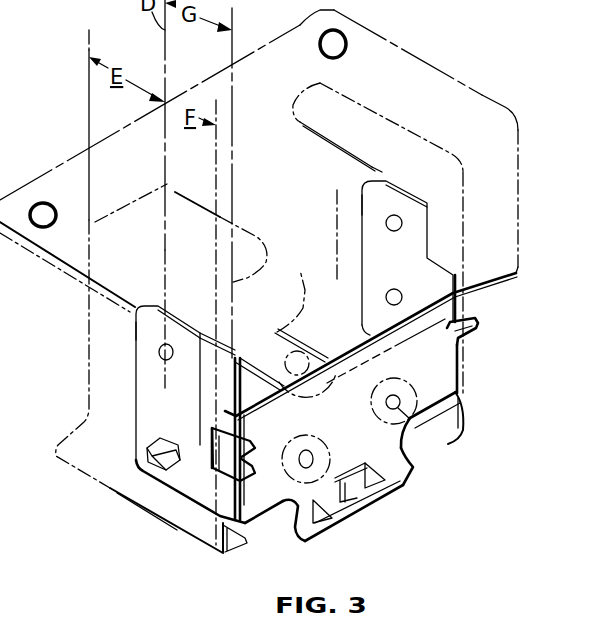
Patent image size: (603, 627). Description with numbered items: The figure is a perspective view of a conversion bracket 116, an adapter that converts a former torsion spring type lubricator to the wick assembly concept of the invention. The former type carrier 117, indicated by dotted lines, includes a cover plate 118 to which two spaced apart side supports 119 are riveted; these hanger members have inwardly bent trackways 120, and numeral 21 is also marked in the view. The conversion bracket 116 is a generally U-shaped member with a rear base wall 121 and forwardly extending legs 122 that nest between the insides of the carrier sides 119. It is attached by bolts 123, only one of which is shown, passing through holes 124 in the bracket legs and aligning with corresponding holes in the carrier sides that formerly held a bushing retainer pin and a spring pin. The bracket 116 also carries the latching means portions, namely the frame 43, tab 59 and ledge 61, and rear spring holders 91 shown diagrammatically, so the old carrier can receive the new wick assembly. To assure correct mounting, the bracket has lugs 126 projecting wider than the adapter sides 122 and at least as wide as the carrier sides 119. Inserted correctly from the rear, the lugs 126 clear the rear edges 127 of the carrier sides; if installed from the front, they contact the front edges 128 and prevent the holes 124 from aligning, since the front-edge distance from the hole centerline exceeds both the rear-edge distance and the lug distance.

The gas spring support housing 21 is at (114, 291).
The frame 43 is at (338, 528).
The tab 59 is at (356, 480).
The ledge 61 is at (411, 460).
The rear spring holders 91 is at (326, 433).
The conversion bracket 116 is at (410, 443).
The former type carrier 117 is at (68, 396).
The cover plate 118 is at (388, 65).
The side supports 119 is at (105, 343).
The trackways 120 is at (244, 549).
The rear base wall 121 is at (268, 487).
The legs 122 is at (195, 420).
The bolts 123 is at (138, 466).
The holes 124 is at (161, 358).
The lugs 126 is at (290, 431).
The rear edges 127 is at (217, 330).
The front edges 128 is at (90, 293).